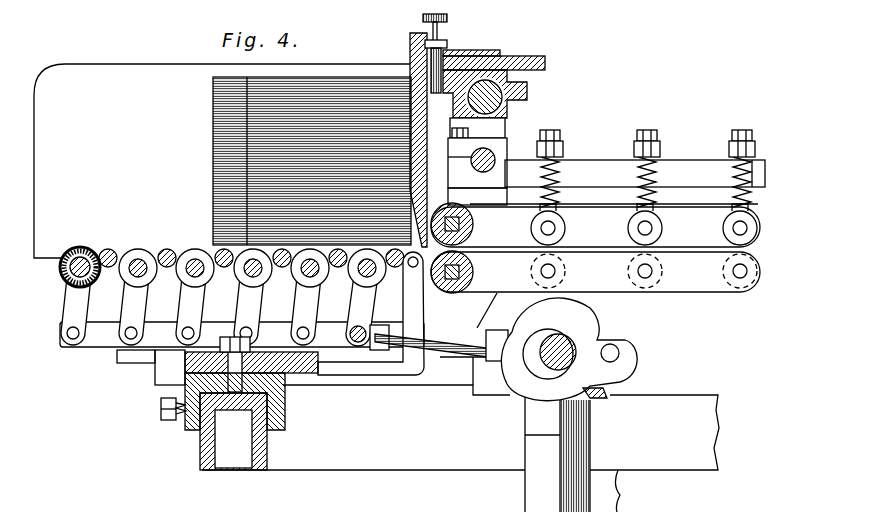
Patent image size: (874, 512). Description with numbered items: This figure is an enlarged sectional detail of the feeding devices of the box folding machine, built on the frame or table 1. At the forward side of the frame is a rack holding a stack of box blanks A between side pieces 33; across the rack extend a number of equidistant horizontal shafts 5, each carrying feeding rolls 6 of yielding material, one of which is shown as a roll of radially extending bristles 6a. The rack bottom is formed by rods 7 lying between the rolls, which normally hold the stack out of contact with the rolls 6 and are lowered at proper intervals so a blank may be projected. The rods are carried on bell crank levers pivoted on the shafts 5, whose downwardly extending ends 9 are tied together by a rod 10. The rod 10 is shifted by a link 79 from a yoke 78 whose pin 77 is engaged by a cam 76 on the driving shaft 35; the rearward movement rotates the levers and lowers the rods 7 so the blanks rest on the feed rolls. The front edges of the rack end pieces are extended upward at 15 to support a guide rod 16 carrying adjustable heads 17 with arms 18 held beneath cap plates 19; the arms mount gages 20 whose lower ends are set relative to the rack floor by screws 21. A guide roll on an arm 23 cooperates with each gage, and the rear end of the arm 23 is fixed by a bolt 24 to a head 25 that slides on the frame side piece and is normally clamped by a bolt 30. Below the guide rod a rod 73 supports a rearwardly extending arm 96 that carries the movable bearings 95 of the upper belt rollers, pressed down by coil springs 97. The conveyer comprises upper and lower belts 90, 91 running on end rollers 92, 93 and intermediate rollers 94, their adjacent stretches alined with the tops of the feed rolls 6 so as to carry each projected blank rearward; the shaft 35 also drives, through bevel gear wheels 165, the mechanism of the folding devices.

The frame or table 1 is at (460, 434).
The shafts 5 is at (143, 259).
The feeding rolls 6 is at (134, 251).
The bristle feeding roll 6a is at (80, 248).
The rods 7 is at (173, 247).
The downwardly extending ends of bell crank levers 9 is at (225, 309).
The rod 10 is at (242, 353).
The upward extensions of the end pieces 15 is at (477, 162).
The guide rod 16 is at (478, 97).
The heads 17 is at (500, 68).
The arms 18 is at (547, 64).
The cap plates 19 is at (472, 50).
The gages 20 is at (413, 57).
The screws 21 is at (447, 14).
The arm 23 is at (417, 314).
The bolt 24 is at (232, 360).
The head 25 is at (188, 388).
The bolt 30 is at (166, 421).
The side pieces of the rack 33 is at (222, 161).
The shaft 35 is at (578, 341).
The rod 73 is at (494, 158).
The cam 76 is at (565, 304).
The pin 77 is at (614, 352).
The yoke 78 is at (499, 345).
The link 79 is at (476, 310).
The upper belt 90 is at (697, 205).
The lower belt 91 is at (692, 292).
The rollers 92 is at (473, 226).
The rollers 93 is at (473, 274).
The rollers 94 is at (630, 228).
The movable bearings 95 is at (558, 207).
The arm 96 is at (635, 173).
The coil springs 97 is at (563, 160).
The bevel gear wheels 165 is at (607, 397).
The box blanks A is at (317, 79).